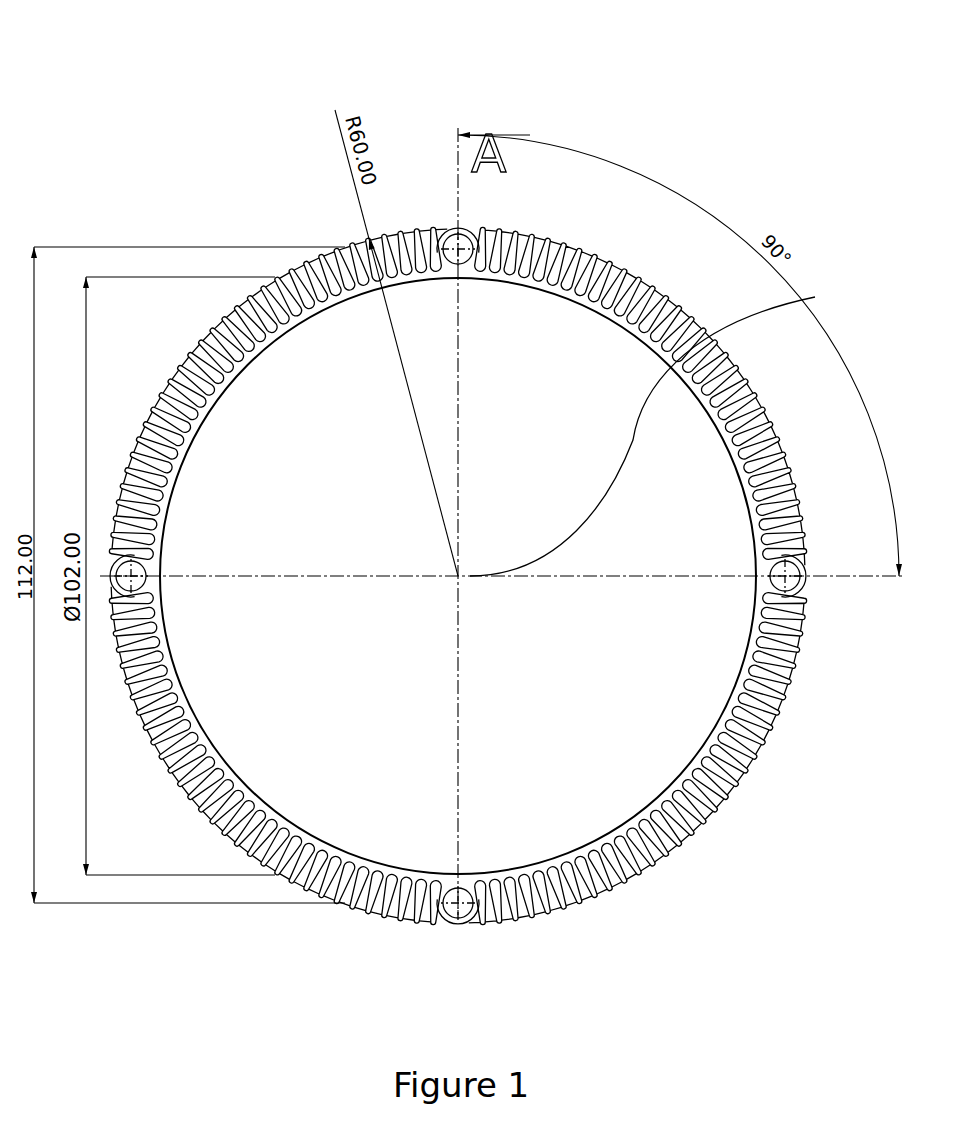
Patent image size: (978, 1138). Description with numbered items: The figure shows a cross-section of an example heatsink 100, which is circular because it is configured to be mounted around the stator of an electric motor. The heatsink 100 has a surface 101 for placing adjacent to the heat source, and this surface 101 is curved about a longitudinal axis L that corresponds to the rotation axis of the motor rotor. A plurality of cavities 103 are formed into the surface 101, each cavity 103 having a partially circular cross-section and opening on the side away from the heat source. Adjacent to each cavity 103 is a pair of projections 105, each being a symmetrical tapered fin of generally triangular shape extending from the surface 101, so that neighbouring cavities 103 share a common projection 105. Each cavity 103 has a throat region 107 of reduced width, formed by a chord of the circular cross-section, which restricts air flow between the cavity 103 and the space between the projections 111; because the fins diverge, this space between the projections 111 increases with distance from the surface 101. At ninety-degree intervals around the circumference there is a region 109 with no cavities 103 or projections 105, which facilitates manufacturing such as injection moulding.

The heatsink 100 is at (200, 114).
The surface 101 is at (710, 816).
The cavity 103 is at (632, 840).
The projection 105 is at (757, 195).
The throat region 107 is at (582, 272).
The region 109 is at (803, 576).
The space between the projections 111 is at (577, 915).
The longitudinal axis L is at (655, 429).